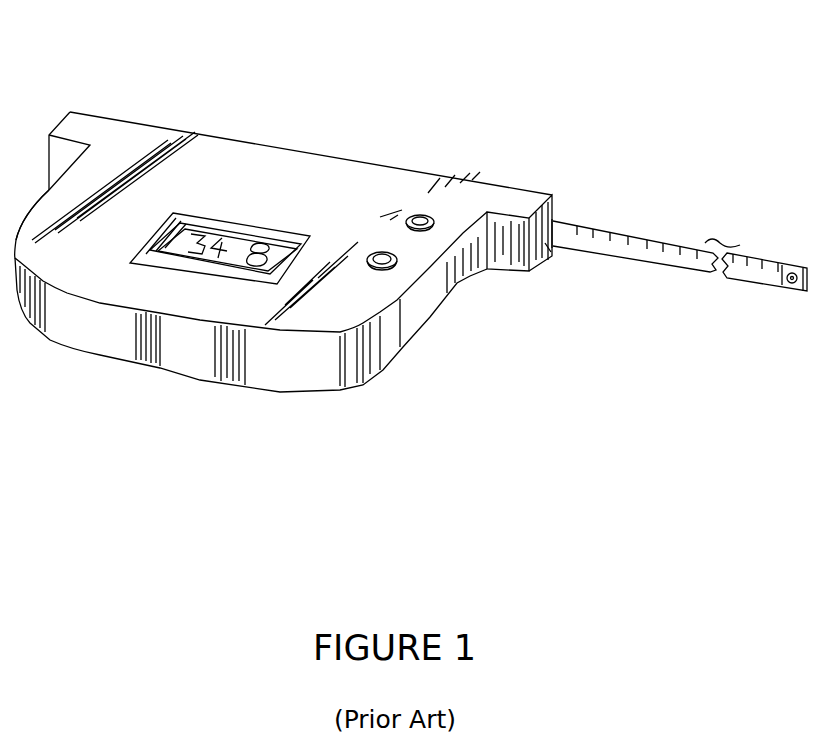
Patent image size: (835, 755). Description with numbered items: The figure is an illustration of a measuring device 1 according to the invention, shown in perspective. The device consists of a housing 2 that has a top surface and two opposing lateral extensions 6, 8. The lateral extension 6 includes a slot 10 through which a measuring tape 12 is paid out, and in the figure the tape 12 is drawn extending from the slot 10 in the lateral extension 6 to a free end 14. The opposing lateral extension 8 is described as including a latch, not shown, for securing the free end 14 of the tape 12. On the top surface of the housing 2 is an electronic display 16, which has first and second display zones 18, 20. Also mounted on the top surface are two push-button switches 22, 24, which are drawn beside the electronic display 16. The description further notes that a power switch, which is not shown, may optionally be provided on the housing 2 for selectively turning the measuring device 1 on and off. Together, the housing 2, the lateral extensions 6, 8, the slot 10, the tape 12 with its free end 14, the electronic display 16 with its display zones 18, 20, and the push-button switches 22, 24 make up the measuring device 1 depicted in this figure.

The measuring device 1 is at (97, 72).
The housing 2 is at (32, 214).
The lateral extension 6 is at (531, 229).
The lateral extension 8 is at (69, 143).
The slot 10 is at (555, 246).
The measuring tape 12 is at (680, 252).
The free end 14 is at (795, 266).
The electronic display 16 is at (231, 220).
The first display zone 18 is at (191, 276).
The second display zone 20 is at (233, 283).
The push-button switch 22 is at (408, 198).
The push-button switch 24 is at (372, 235).